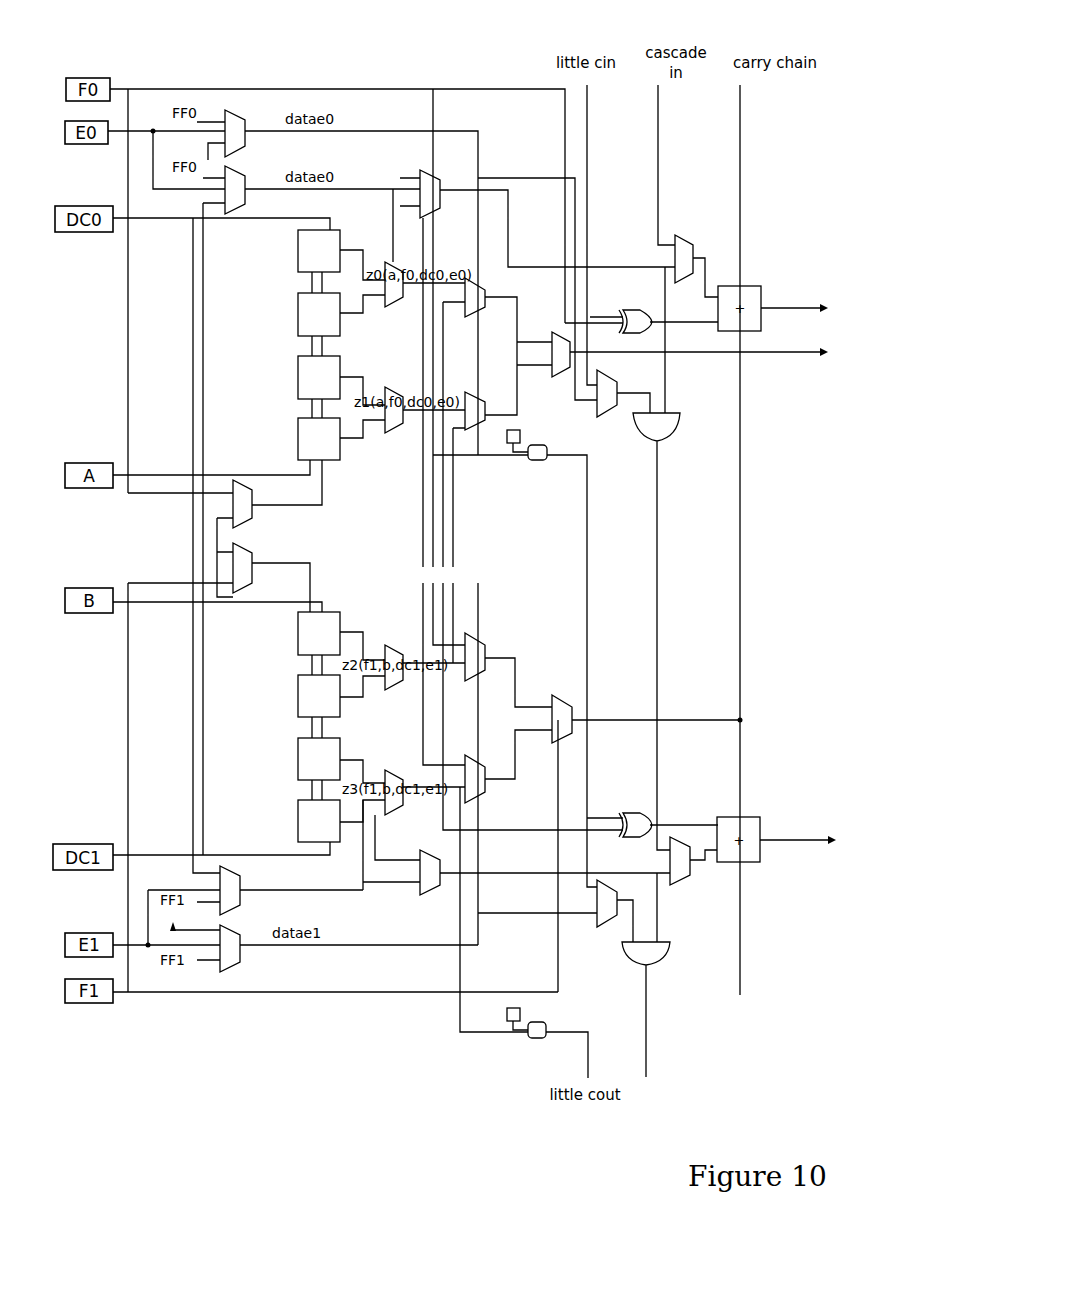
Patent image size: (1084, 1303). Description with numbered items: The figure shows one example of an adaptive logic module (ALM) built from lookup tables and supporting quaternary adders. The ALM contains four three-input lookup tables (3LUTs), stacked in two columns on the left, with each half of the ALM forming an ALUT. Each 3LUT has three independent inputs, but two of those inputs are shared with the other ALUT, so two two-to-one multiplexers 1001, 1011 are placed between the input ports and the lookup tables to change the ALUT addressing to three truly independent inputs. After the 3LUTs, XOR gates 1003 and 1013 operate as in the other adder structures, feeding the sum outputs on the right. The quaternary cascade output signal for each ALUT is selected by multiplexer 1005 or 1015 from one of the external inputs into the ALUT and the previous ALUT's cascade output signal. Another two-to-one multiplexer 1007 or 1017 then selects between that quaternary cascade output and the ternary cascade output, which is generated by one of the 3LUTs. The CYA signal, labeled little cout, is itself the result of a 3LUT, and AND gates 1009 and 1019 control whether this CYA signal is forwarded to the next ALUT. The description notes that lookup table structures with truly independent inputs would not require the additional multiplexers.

The 2-1 multiplexer 1001 is at (256, 518).
The XOR gate 1003 is at (634, 310).
The multiplexer 1005 is at (612, 386).
The 2-1 multiplexer 1007 is at (670, 418).
The AND gate 1009 is at (545, 450).
The 2-1 multiplexer 1011 is at (256, 562).
The XOR gate 1013 is at (652, 822).
The multiplexer 1015 is at (619, 894).
The 2-1 multiplexer 1017 is at (662, 958).
The AND gate 1019 is at (548, 1030).